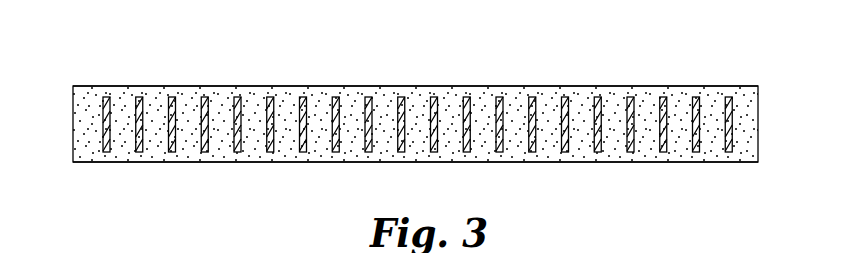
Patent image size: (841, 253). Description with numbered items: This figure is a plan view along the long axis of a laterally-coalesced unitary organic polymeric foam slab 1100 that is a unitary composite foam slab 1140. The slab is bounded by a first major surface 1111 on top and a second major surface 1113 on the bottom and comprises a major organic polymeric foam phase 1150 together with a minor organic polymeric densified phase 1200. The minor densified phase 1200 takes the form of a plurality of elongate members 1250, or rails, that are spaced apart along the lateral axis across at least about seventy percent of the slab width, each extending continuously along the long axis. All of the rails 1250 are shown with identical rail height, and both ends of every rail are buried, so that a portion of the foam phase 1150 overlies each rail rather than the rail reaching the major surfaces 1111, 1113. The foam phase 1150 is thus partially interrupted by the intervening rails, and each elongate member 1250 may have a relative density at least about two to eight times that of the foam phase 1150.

The laterally-coalesced unitary organic polymeric foam slab 1100 is at (403, 119).
The first major surface 1111 is at (318, 87).
The second major surface 1113 is at (288, 162).
The unitary composite foam slab 1140 is at (417, 121).
The major organic polymeric foam phase 1150 is at (416, 117).
The minor organic polymeric densified phase 1200 is at (417, 121).
The elongate member 1250 is at (532, 103).